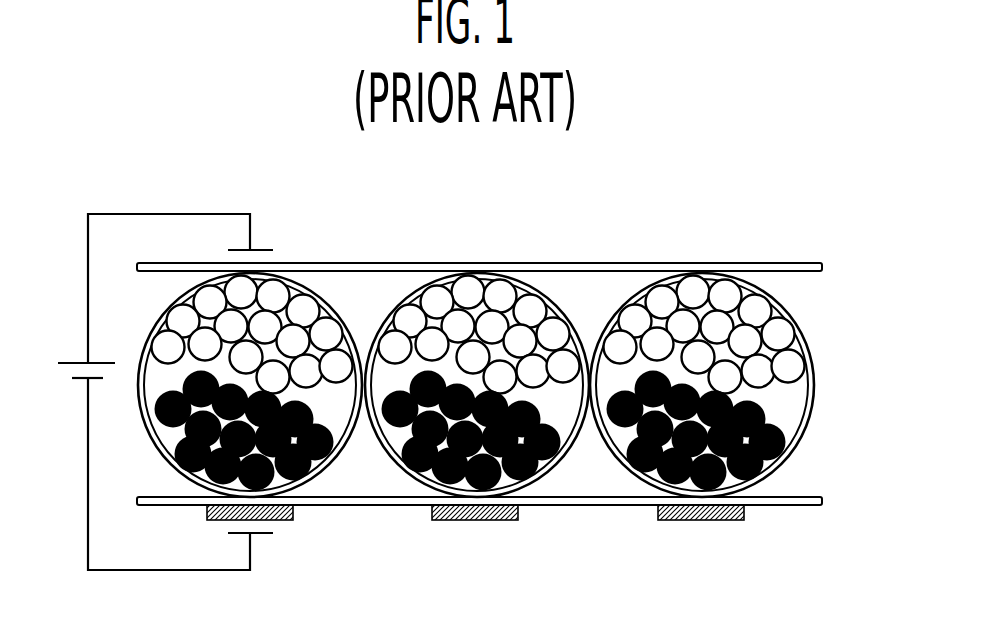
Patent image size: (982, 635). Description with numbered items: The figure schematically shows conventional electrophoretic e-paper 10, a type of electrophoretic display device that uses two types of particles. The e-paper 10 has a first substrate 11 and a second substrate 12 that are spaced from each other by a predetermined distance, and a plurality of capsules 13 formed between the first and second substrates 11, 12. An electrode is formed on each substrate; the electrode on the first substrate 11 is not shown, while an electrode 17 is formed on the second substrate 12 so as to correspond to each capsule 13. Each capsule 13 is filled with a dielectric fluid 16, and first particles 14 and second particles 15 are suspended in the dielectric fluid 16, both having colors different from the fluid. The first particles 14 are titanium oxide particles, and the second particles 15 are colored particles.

The conventional electrophoretic e-paper 10 is at (810, 230).
The first substrate 11 is at (407, 264).
The second substrate 12 is at (355, 506).
The capsule 13 is at (812, 344).
The first particles 14 is at (762, 310).
The second particles 15 is at (787, 438).
The dielectric fluid 16 is at (798, 393).
The electrode 17 is at (470, 521).